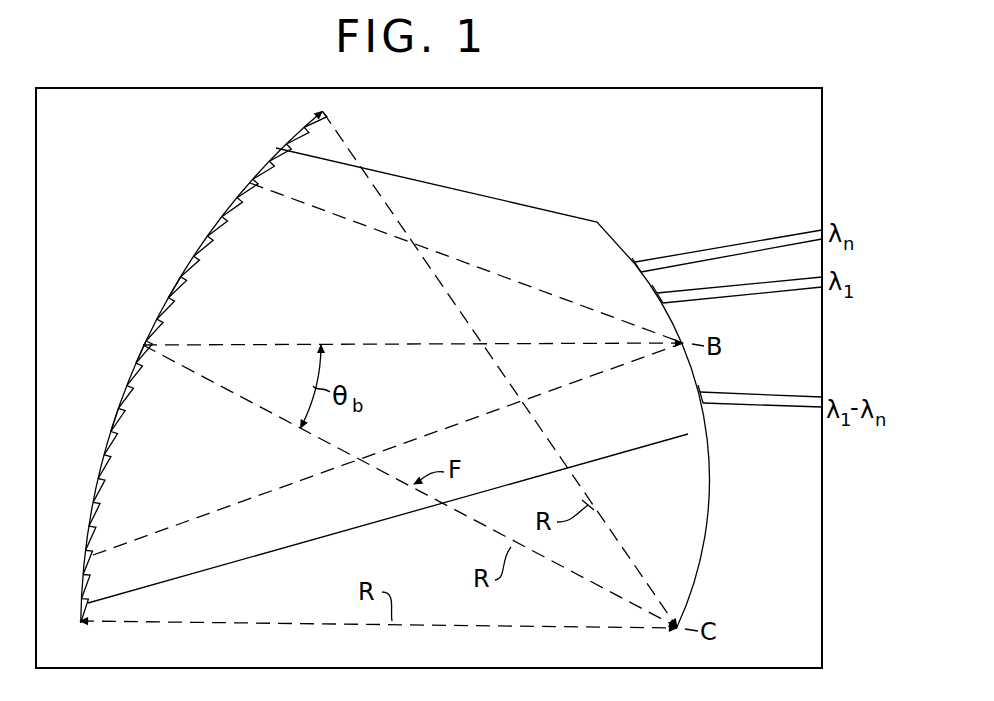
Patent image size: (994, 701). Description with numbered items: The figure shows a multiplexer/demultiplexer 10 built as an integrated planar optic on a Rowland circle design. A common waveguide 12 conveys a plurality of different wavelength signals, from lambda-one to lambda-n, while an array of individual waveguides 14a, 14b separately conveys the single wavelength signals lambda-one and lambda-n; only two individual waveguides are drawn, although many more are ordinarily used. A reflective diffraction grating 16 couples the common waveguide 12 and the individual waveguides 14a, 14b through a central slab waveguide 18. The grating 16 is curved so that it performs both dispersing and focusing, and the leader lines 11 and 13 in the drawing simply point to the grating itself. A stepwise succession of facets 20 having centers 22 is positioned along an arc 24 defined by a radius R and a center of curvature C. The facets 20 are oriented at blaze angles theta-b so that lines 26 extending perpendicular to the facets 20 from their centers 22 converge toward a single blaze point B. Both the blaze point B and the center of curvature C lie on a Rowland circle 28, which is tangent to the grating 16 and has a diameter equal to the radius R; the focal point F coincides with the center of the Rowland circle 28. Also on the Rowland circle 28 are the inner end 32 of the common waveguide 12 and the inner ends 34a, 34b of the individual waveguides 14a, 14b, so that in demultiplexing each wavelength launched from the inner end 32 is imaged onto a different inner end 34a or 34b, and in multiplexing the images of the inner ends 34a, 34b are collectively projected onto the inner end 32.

The multiplexer/demultiplexer 10 is at (98, 146).
The grating pole 11 is at (130, 347).
The common waveguide 12 is at (757, 407).
The grating surface 13 is at (108, 413).
The individual waveguide 14a is at (766, 293).
The individual waveguide 14b is at (727, 247).
The reflective diffraction grating 16 is at (165, 283).
The central slab waveguide 18 is at (492, 198).
The facets 20 is at (204, 367).
The centers 22 is at (256, 185).
The arc 24 is at (300, 140).
The lines 26 is at (337, 218).
The Rowland circle 28 is at (704, 549).
The inner end 32 is at (698, 396).
The inner end 34a is at (658, 297).
The inner end 34b is at (635, 268).